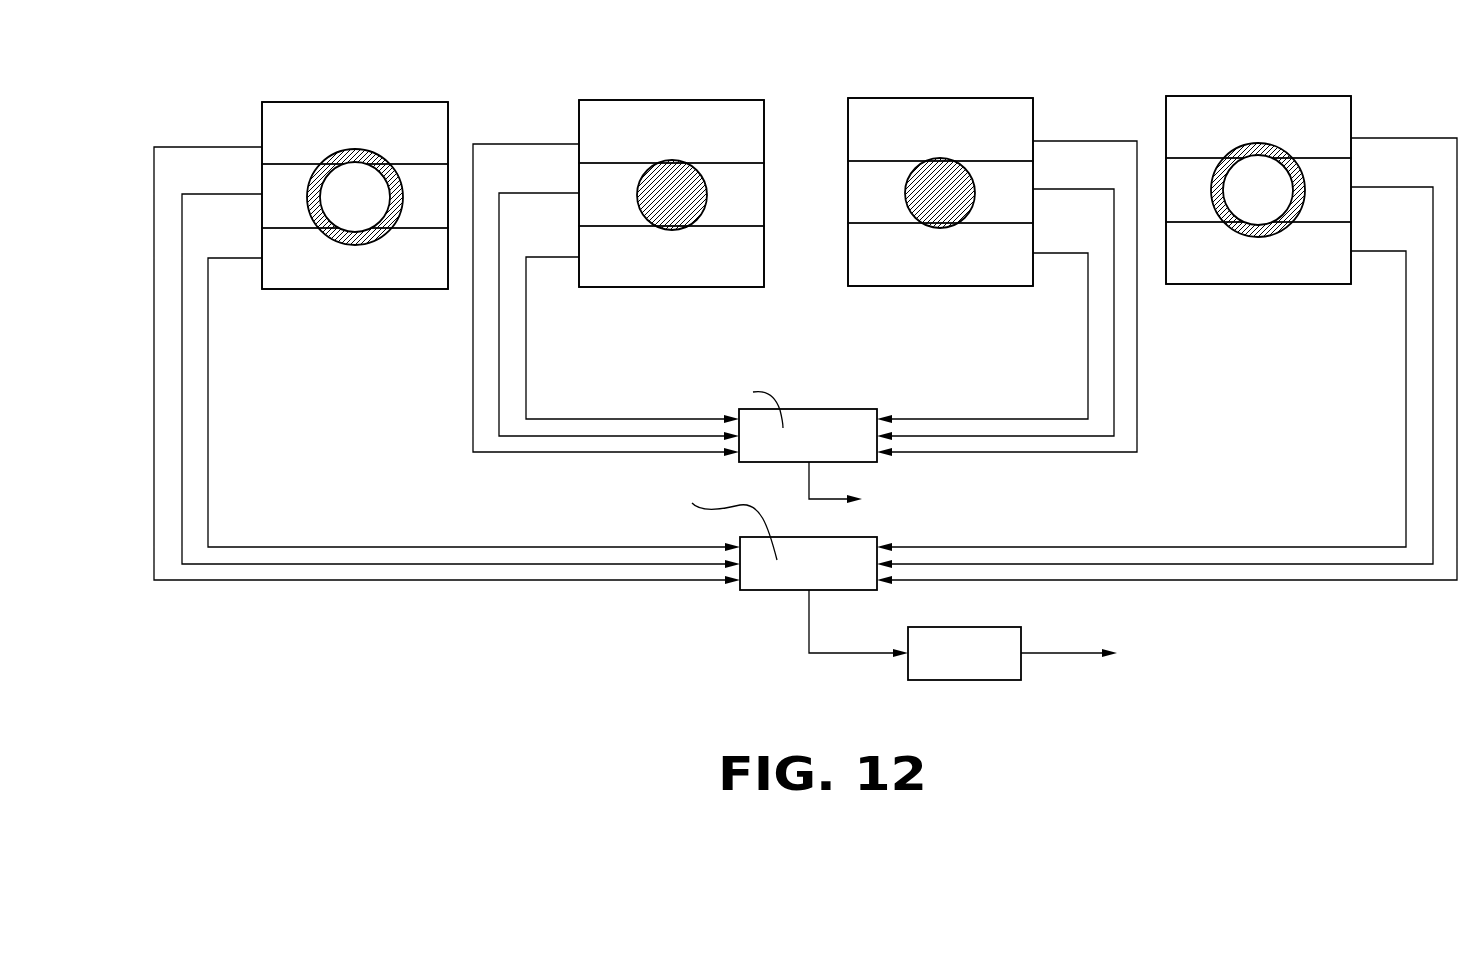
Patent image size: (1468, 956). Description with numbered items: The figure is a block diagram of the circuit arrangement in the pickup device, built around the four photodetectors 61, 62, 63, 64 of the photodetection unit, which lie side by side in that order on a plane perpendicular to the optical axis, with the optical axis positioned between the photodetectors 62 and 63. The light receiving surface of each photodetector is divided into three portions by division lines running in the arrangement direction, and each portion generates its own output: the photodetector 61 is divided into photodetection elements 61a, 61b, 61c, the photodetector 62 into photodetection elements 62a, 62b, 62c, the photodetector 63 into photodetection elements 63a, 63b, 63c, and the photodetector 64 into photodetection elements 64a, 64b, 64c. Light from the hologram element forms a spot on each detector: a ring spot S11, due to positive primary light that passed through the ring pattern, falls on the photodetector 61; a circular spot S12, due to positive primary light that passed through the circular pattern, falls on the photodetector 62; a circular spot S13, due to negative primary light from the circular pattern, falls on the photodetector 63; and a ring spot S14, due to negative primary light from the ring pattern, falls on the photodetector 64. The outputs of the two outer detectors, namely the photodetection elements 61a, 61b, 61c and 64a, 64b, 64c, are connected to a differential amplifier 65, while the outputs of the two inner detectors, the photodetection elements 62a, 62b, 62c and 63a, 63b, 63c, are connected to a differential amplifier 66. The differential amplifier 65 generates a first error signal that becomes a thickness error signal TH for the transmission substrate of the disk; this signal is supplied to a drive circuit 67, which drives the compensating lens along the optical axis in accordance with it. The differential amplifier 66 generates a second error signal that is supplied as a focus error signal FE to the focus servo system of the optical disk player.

The photodetector 61 is at (325, 184).
The photodetection element 61a is at (330, 270).
The photodetection element 61b is at (285, 195).
The photodetection element 61c is at (283, 127).
The ring spot S11 is at (365, 157).
The photodetector 62 is at (633, 183).
The photodetection element 62a is at (647, 270).
The photodetection element 62b is at (603, 193).
The photodetection element 62c is at (602, 125).
The circular spot S12 is at (667, 173).
The photodetector 63 is at (975, 182).
The photodetection element 63a is at (963, 267).
The photodetection element 63b is at (1008, 192).
The photodetection element 63c is at (1010, 122).
The circular spot S13 is at (943, 173).
The photodetector 64 is at (1282, 182).
The photodetection element 64a is at (1283, 265).
The photodetection element 64b is at (1328, 190).
The photodetection element 64c is at (1330, 120).
The ring spot S14 is at (1248, 148).
The differential amplifier 65 is at (785, 590).
The differential amplifier 66 is at (798, 409).
The drive circuit 67 is at (968, 627).